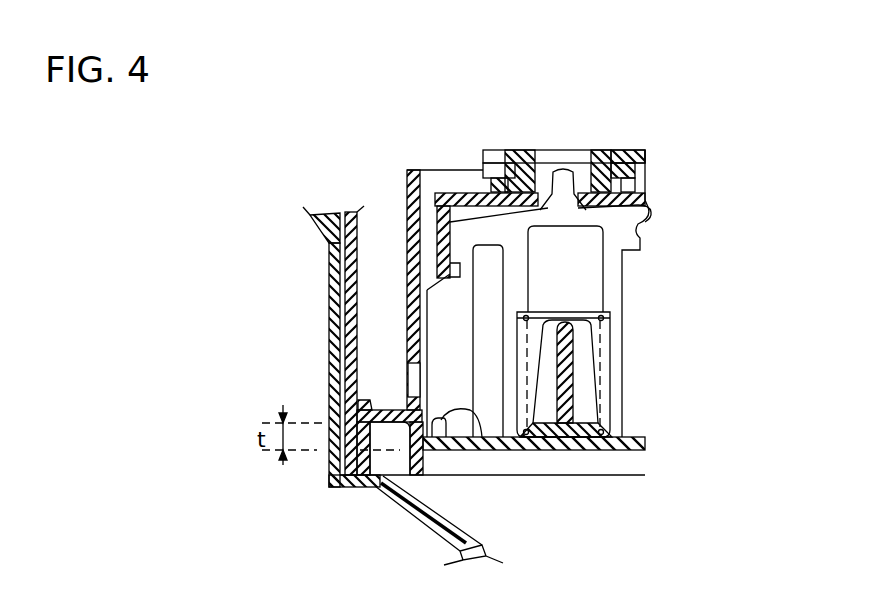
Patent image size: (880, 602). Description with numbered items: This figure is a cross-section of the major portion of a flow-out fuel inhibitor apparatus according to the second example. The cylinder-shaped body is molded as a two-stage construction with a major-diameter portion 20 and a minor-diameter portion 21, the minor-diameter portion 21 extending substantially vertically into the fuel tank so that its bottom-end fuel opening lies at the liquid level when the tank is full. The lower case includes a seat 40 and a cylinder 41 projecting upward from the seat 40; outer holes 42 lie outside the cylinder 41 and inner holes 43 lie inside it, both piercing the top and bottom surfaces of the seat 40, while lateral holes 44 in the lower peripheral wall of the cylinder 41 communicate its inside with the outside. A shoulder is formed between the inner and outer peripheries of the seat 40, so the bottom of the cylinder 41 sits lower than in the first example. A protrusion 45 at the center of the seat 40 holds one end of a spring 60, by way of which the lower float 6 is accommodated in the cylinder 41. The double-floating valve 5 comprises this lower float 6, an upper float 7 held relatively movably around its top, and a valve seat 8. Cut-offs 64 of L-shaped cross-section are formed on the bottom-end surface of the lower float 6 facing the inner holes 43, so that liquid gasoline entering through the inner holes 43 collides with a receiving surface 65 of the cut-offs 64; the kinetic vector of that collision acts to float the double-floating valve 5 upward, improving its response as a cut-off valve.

The double-floating valve 5 is at (660, 222).
The lower float 6 is at (622, 298).
The upper float 7 is at (450, 196).
The valve seat 8 is at (522, 152).
The major-diameter portion 20 is at (323, 293).
The minor-diameter portion 21 is at (456, 550).
The seat 40 is at (353, 397).
The cylinder 41 is at (408, 190).
The outer holes 42 is at (386, 400).
The inner holes 43 is at (397, 477).
The lateral holes 44 is at (408, 385).
The protrusion 45 is at (570, 360).
The spring 60 is at (603, 390).
The cut-offs 64 is at (441, 432).
The receiving surface 65 is at (470, 410).